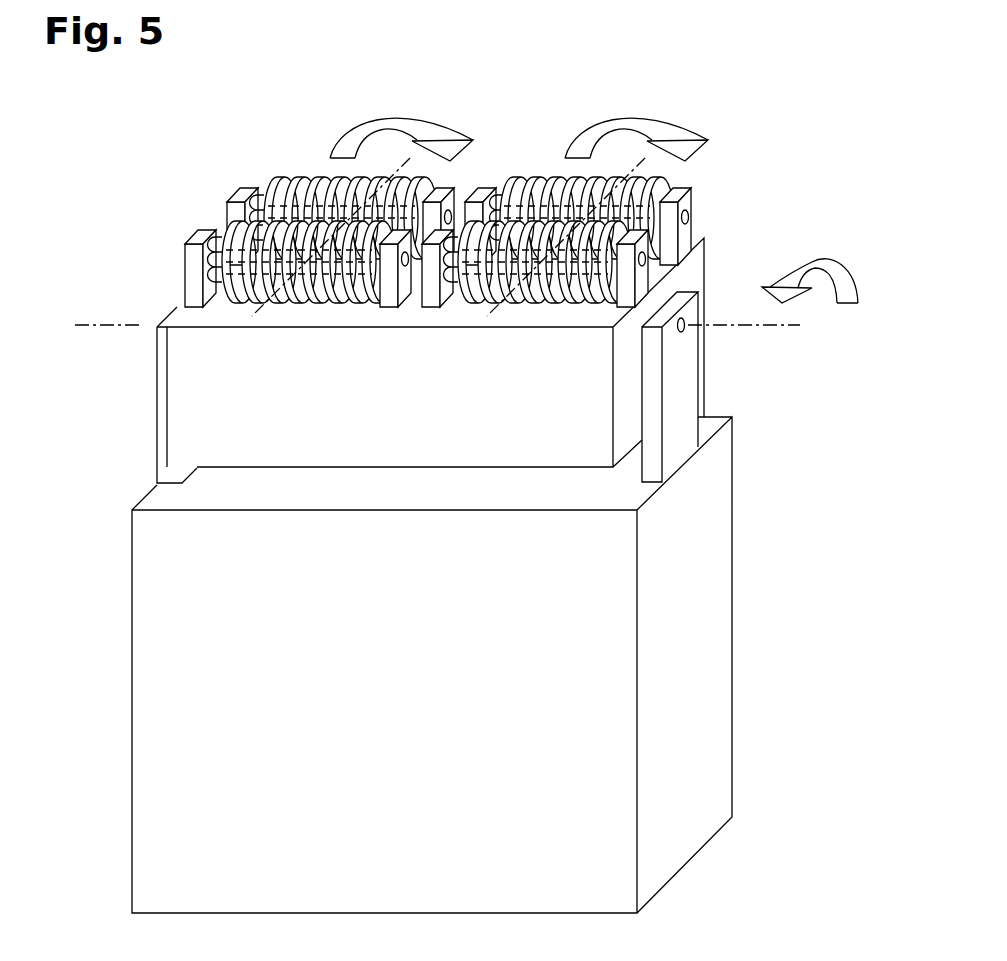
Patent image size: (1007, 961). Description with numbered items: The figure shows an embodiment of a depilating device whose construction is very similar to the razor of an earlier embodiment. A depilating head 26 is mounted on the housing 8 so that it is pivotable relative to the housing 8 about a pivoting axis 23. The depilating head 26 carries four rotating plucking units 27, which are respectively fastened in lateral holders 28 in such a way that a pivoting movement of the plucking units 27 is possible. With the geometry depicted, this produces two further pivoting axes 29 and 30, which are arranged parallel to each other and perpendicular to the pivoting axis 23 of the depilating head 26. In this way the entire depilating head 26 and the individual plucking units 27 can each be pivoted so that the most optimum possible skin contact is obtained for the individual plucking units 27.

The housing 8 is at (697, 599).
The pivoting axis 23 is at (762, 327).
The depilating head 26 is at (208, 407).
The rotating plucking unit 27 is at (293, 178).
The lateral holder 28 is at (693, 188).
The further pivoting axis 29 is at (412, 157).
The further pivoting axis 30 is at (647, 157).